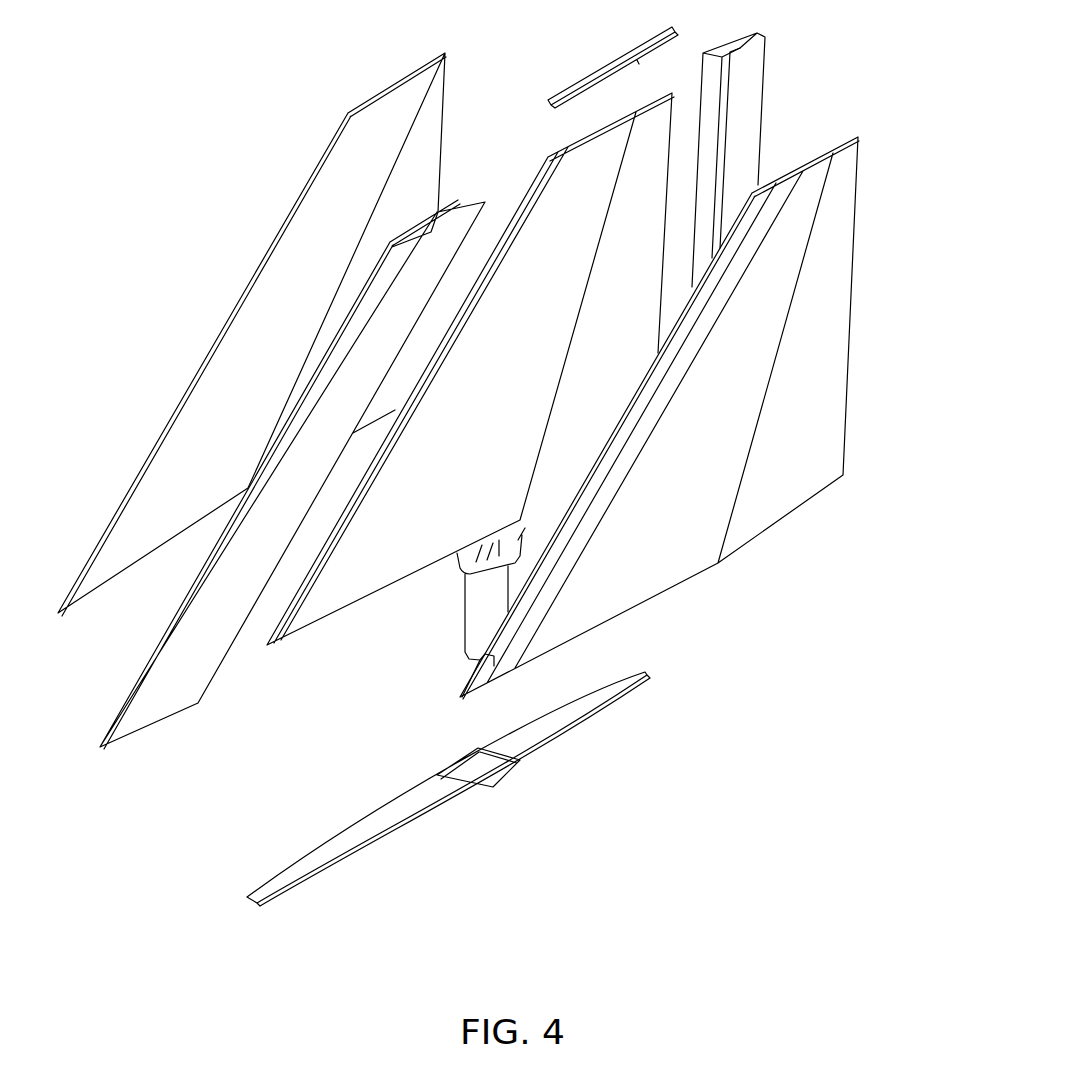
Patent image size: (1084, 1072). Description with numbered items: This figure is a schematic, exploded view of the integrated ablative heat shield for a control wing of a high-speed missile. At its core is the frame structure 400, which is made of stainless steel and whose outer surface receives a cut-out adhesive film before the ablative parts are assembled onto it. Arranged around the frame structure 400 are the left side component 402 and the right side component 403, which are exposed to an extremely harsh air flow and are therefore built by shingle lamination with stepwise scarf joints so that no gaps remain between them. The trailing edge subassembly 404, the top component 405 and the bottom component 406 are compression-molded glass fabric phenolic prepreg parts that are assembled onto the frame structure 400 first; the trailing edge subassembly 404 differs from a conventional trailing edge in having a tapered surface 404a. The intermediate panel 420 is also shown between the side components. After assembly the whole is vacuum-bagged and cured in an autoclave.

The frame structure 400 is at (600, 192).
The left side component 402 is at (292, 282).
The right side component 403 is at (805, 463).
The trailing edge subassembly 404 is at (775, 57).
The tapered surface 404a is at (735, 118).
The top component 405 is at (615, 61).
The bottom component 406 is at (545, 772).
The intermediate panel 420 is at (362, 395).